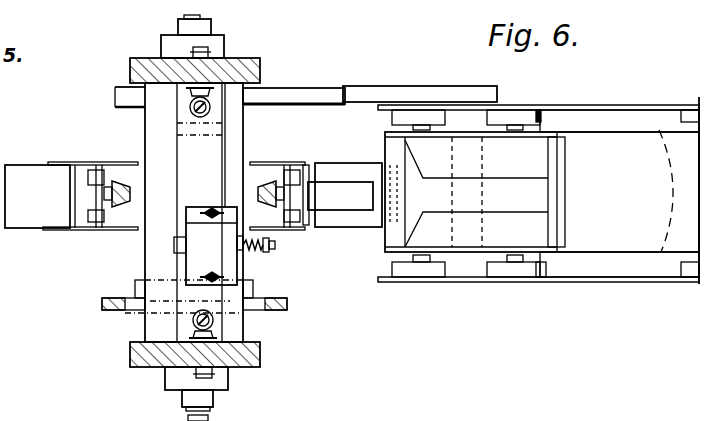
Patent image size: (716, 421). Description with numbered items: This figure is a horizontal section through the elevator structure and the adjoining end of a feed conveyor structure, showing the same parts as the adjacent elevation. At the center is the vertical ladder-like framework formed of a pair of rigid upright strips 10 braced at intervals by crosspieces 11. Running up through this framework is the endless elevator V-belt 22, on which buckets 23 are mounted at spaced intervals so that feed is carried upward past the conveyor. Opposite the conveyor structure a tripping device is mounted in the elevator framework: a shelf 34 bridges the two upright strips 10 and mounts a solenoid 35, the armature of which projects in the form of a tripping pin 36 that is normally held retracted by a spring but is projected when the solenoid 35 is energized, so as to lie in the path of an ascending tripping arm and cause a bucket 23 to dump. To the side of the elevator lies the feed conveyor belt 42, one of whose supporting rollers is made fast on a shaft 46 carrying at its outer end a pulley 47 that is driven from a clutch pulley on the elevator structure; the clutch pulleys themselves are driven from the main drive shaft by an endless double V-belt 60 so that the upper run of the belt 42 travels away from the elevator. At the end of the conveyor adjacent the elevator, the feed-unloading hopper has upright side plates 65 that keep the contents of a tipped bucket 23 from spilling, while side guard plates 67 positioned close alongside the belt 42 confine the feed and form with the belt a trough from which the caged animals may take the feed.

The upright strips 10 is at (248, 72).
The crosspieces 11 is at (152, 136).
The elevator V-belt 22 is at (130, 192).
The buckets 23 is at (22, 176).
The shelf 34 is at (212, 148).
The solenoid 35 is at (196, 252).
The tripping pin 36 is at (272, 247).
The conveyor belt 42 is at (633, 242).
The shaft 46 is at (292, 100).
The pulley 47 is at (452, 86).
The endless double V-belt 60 is at (287, 302).
The upright side plates 65 is at (399, 239).
The side guard plates 67 is at (607, 105).